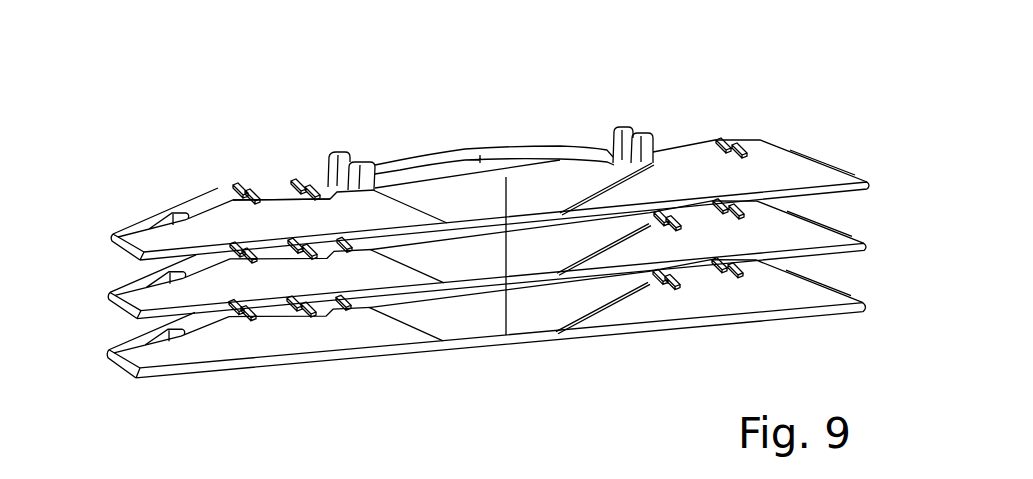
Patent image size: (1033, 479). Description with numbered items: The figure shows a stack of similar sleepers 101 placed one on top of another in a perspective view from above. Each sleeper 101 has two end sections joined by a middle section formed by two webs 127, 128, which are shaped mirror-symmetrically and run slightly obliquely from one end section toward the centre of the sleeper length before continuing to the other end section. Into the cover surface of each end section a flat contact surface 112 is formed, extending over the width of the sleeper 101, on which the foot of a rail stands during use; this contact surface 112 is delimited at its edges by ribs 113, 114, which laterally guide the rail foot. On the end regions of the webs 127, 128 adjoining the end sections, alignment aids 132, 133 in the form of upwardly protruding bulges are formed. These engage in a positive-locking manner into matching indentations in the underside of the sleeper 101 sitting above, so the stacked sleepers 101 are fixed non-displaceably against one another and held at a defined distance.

The sleeper 101 is at (143, 238).
The contact surface 112 is at (283, 189).
The rib 113 is at (243, 184).
The rib 114 is at (294, 180).
The web 127 is at (465, 148).
The web 128 is at (533, 176).
The alignment aid 132 is at (337, 152).
The alignment aid 133 is at (362, 162).